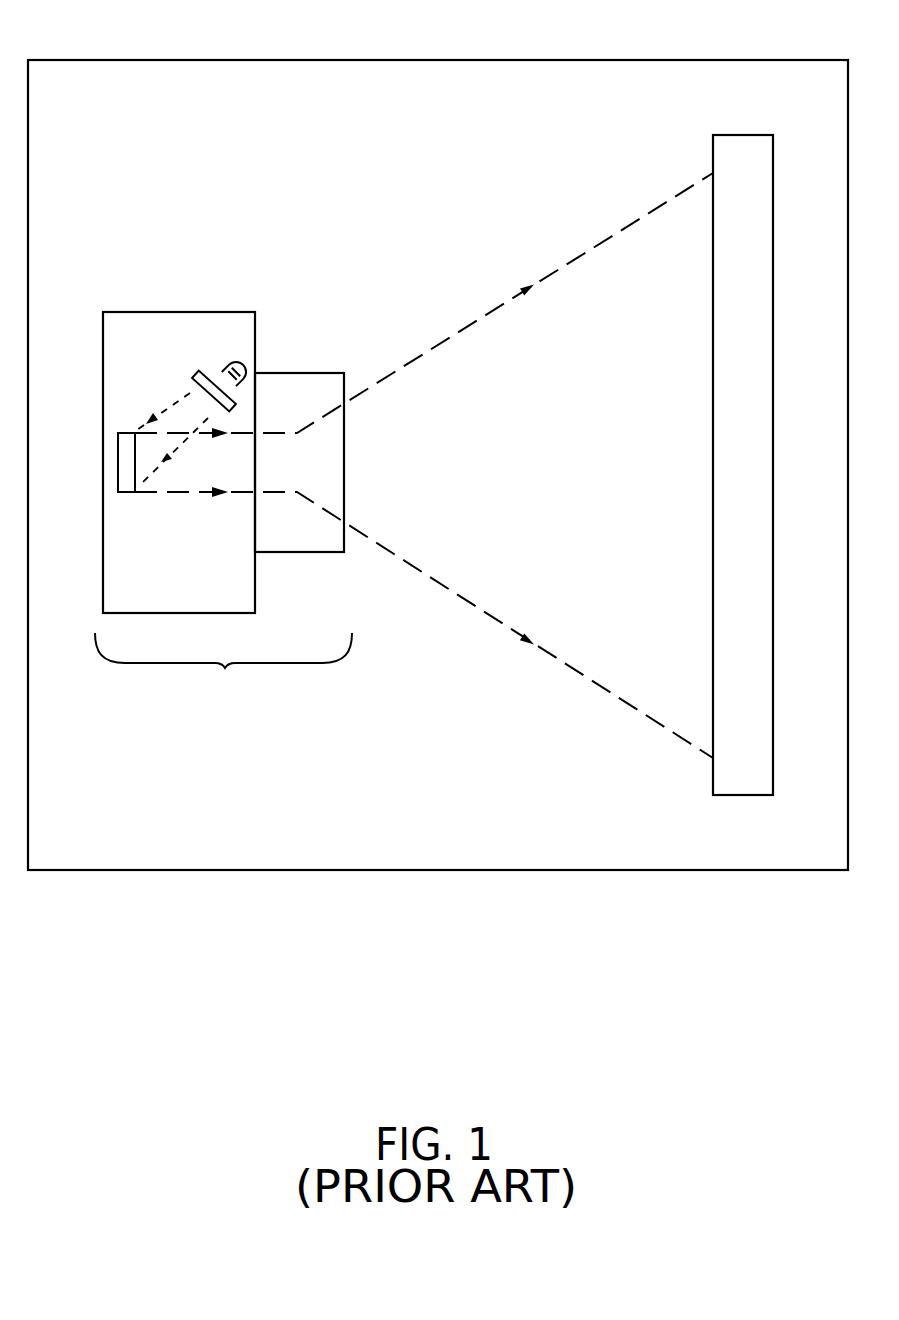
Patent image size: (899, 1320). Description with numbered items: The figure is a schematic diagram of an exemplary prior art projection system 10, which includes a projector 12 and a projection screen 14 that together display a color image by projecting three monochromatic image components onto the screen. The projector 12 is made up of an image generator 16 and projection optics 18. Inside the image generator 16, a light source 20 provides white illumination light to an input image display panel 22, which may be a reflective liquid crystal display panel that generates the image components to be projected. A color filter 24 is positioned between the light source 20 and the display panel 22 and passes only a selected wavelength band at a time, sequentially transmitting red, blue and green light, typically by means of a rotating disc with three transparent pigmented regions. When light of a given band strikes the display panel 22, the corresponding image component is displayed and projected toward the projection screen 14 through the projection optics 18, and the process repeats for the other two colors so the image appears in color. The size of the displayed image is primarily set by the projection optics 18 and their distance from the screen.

The projection system 10 is at (607, 60).
The projector 12 is at (223, 671).
The projection screen 14 is at (775, 297).
The image generator 16 is at (145, 312).
The projection optics 18 is at (297, 372).
The light source 20 is at (222, 368).
The input image display panel 22 is at (123, 492).
The color filter 24 is at (198, 382).